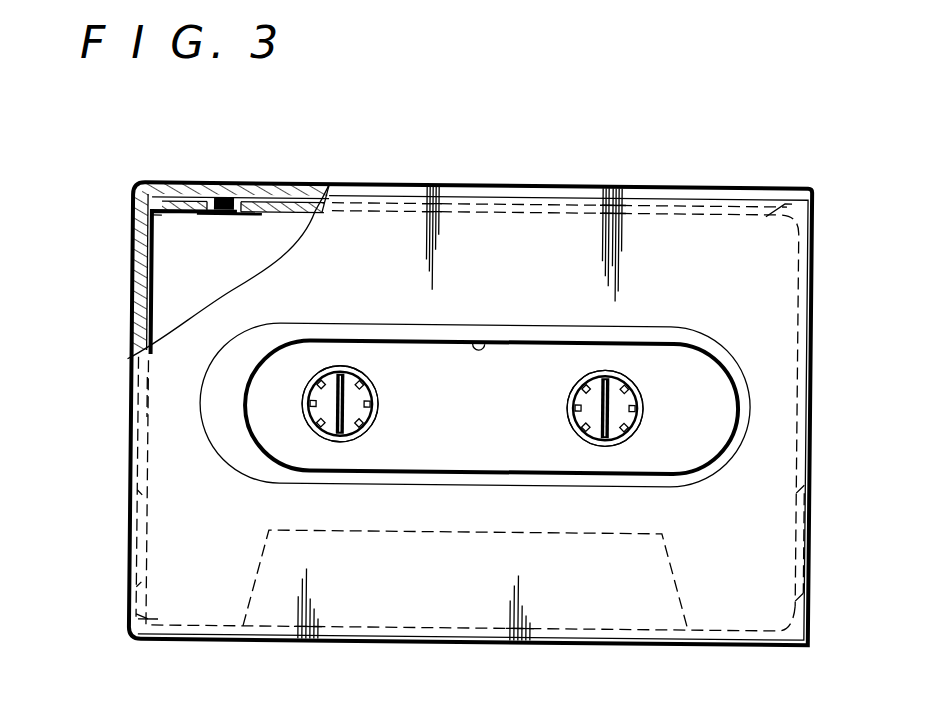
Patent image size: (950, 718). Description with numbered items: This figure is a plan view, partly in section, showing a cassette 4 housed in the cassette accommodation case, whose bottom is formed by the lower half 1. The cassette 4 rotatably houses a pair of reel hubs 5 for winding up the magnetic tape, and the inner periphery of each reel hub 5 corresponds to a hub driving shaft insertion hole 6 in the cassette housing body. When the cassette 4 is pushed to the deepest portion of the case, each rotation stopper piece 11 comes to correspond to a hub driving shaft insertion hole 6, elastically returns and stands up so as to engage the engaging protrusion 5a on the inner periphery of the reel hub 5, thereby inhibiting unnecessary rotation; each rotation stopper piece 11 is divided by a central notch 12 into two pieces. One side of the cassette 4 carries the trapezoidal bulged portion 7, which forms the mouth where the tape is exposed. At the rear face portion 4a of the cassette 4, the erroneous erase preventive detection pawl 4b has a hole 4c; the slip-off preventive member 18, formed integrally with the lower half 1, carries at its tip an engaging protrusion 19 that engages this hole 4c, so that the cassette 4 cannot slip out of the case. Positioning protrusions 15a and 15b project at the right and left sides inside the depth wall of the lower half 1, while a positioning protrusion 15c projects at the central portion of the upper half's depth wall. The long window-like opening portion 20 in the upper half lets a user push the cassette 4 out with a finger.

The lower half 1 is at (295, 190).
The cassette 4 is at (815, 296).
The rear face portion 4a is at (268, 197).
The erroneous erase preventive detection pawl 4b is at (220, 227).
The hole 4c is at (217, 191).
The reel hub 5 is at (353, 438).
The engaging protrusion 5a is at (312, 372).
The hub driving shaft insertion hole 6 is at (362, 440).
The trapezoidal bulged portion 7 is at (423, 602).
The rotation stopper piece 11 is at (352, 372).
The notch 12 is at (347, 405).
The positioning protrusion 15a is at (152, 628).
The positioning protrusion 15b is at (138, 223).
The positioning protrusion 15c is at (132, 399).
The slip-off preventive member 18 is at (172, 187).
The engaging protrusion 19 is at (202, 220).
The opening portion 20 is at (479, 345).